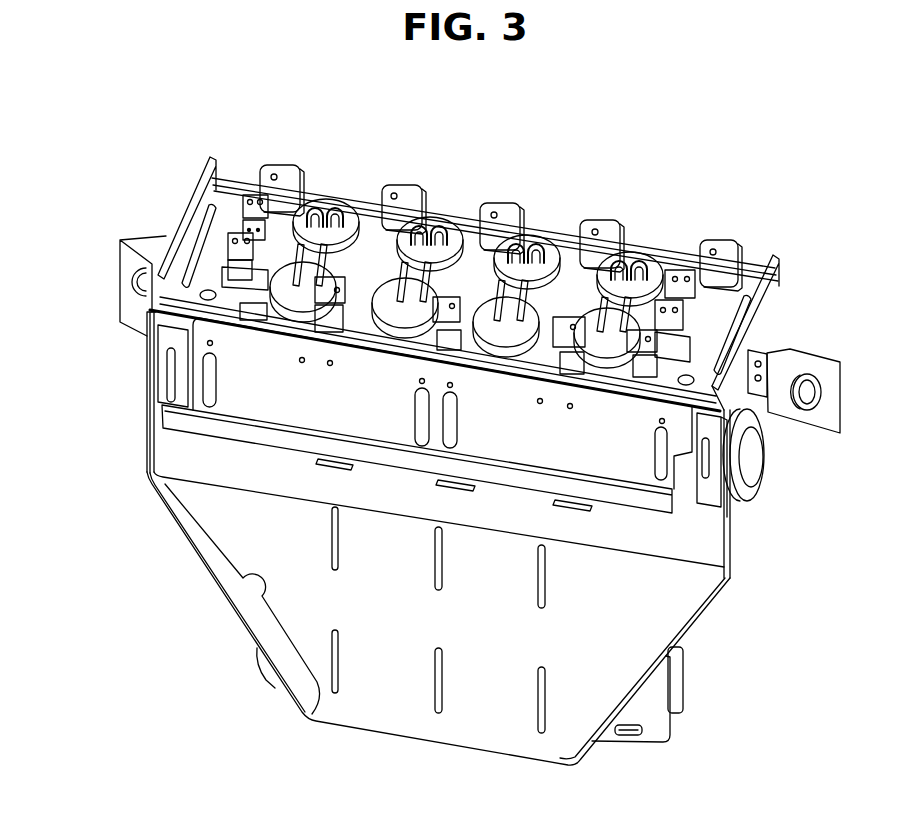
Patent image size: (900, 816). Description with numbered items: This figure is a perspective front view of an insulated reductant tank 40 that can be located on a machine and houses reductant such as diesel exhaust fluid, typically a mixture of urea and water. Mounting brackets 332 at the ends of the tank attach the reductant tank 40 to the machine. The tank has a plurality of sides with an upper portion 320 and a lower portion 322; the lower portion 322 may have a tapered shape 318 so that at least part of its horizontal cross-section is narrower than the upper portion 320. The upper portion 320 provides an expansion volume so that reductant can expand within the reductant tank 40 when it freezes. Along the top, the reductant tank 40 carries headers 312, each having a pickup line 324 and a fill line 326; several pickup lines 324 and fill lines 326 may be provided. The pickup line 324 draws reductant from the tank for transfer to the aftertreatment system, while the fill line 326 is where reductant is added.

The insulated reductant tank 40 is at (181, 129).
The header 312 is at (472, 222).
The tapered shape 318 is at (262, 580).
The upper portion 320 is at (102, 300).
The lower portion 322 is at (747, 497).
The pickup line 324 is at (283, 258).
The fill line 326 is at (288, 312).
The mounting bracket 332 is at (120, 278).